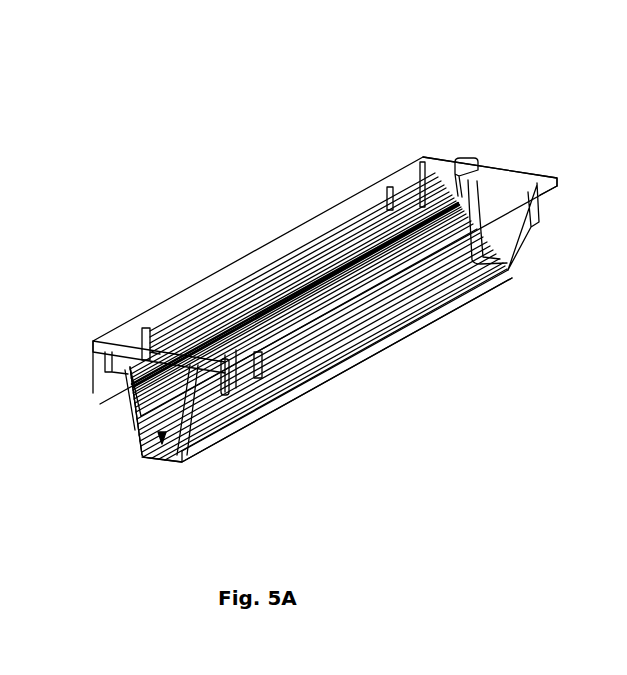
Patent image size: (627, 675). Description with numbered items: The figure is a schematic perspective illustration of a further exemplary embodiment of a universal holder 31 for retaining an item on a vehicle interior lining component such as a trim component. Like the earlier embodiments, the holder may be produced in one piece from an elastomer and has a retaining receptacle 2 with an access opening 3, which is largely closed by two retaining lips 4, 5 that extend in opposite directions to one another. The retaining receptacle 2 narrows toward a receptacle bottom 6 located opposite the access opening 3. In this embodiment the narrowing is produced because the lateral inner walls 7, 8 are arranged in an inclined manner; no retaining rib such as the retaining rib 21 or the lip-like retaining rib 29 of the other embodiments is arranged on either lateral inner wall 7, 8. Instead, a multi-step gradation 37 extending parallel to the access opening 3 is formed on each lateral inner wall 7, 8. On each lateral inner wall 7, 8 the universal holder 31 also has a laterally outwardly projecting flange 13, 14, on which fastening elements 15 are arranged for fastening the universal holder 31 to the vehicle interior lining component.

The universal holder 31 is at (339, 118).
The retaining lip 5 is at (505, 168).
The flange 14 is at (542, 177).
The retaining lip 4 is at (462, 170).
The fastening element 15 is at (160, 350).
The flange 13 is at (112, 352).
The access opening 3 is at (165, 350).
The lateral inner wall 7 is at (132, 392).
The retaining rib 21 is at (143, 414).
The lip-like retaining rib 29 is at (140, 422).
The retaining receptacle 2 is at (143, 451).
The receptacle bottom 6 is at (160, 458).
The lateral inner wall 8 is at (200, 422).
The multi-step gradation 37 is at (170, 400).